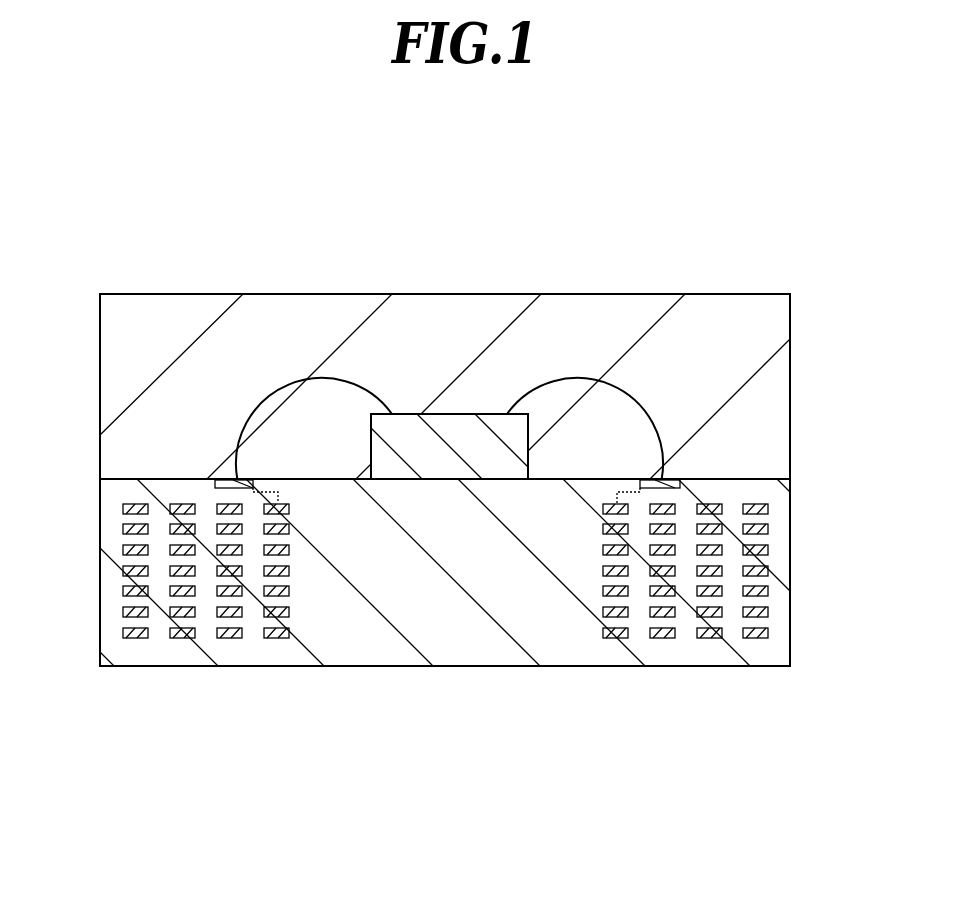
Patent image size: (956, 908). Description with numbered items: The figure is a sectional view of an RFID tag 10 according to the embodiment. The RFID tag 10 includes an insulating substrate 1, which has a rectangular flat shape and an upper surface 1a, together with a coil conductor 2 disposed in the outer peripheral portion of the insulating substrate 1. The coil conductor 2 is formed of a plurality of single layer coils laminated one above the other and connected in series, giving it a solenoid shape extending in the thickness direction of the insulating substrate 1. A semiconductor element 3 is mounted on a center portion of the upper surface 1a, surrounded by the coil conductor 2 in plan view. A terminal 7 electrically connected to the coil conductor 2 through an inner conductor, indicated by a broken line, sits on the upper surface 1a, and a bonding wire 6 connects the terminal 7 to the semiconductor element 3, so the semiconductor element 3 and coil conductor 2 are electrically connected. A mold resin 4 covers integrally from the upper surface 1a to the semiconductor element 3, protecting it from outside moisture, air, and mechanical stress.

The RFID tag 10 is at (142, 245).
The insulating substrate 1 is at (445, 618).
The upper surface 1a is at (548, 479).
The coil conductor 2 is at (752, 638).
The semiconductor element 3 is at (465, 418).
The mold resin 4 is at (722, 337).
The bonding wire 6 is at (330, 378).
The terminal 7 is at (662, 481).